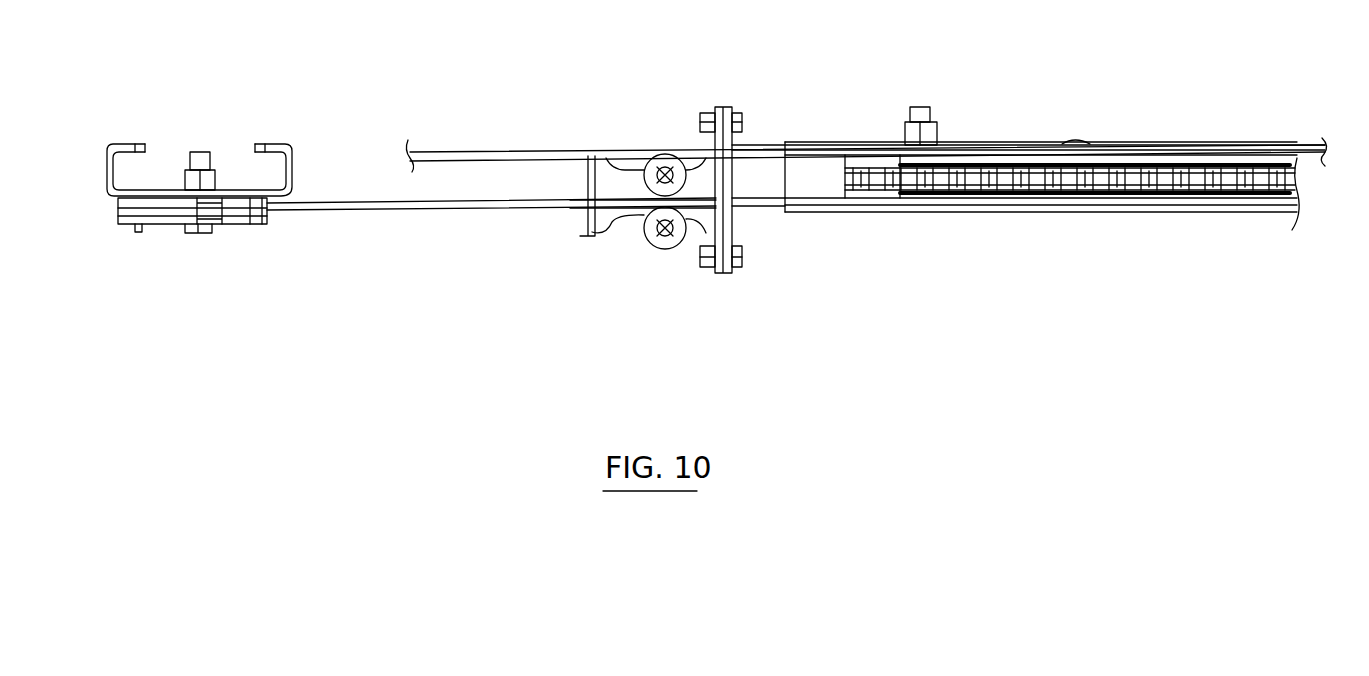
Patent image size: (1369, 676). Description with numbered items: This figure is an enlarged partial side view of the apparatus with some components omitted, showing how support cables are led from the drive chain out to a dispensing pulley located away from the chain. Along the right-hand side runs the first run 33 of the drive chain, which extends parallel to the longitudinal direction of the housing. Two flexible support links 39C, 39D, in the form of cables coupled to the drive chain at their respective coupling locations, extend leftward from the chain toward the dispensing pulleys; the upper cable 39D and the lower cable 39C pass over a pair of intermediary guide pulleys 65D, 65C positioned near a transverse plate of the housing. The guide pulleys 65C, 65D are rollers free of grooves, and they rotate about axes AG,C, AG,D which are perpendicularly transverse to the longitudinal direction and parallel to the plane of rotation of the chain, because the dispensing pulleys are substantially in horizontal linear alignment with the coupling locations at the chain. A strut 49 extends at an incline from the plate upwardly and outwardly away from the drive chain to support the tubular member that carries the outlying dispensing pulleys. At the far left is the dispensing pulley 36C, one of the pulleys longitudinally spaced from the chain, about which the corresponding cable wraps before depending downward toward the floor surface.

The dispensing pulley 36C is at (251, 228).
The flexible support link 39C is at (453, 220).
The flexible support link 39D is at (519, 132).
The strut 49 is at (590, 226).
The intermediary guide pulley 65D is at (668, 130).
The intermediary guide pulley 65C is at (670, 250).
The rotational axis of guide pulley AG,D is at (650, 160).
The rotational axis of guide pulley AG,C is at (658, 242).
The first run of drive chain 33 is at (1205, 170).